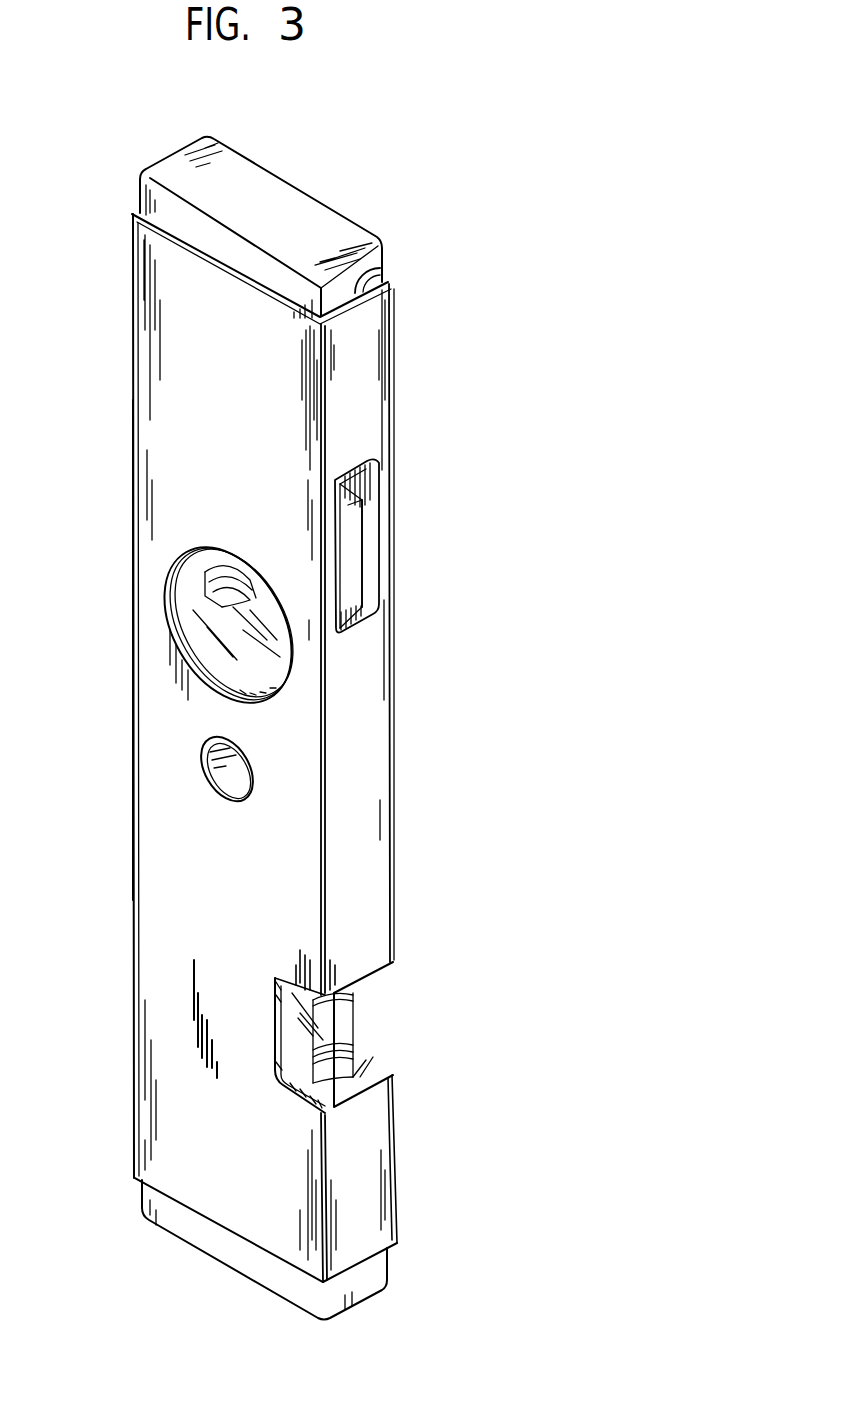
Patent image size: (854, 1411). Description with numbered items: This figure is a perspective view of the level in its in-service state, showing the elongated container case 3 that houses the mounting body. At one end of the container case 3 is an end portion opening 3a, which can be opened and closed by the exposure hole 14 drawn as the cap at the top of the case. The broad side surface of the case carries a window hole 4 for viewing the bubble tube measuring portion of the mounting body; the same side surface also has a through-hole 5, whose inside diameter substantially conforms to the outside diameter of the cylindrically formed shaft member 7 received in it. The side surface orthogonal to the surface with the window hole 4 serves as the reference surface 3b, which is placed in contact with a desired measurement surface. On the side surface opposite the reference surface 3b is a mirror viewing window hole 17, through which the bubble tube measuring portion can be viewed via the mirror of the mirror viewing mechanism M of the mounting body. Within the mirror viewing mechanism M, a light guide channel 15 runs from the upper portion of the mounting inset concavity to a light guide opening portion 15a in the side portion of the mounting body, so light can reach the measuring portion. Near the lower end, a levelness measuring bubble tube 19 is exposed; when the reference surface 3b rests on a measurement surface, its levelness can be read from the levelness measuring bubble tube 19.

The container case 3 is at (377, 341).
The end portion opening 3a is at (380, 273).
The reference surface 3b is at (130, 643).
The window hole 4 is at (215, 552).
The through-hole 5 is at (205, 772).
The shaft member 7 is at (233, 802).
The exposure hole 14 is at (298, 218).
The light guide channel 15 is at (350, 562).
The light guide opening portion 15a is at (362, 587).
The mirror viewing window hole 17 is at (375, 538).
The levelness measuring bubble tube 19 is at (357, 1037).
The mirror viewing mechanism M is at (347, 505).